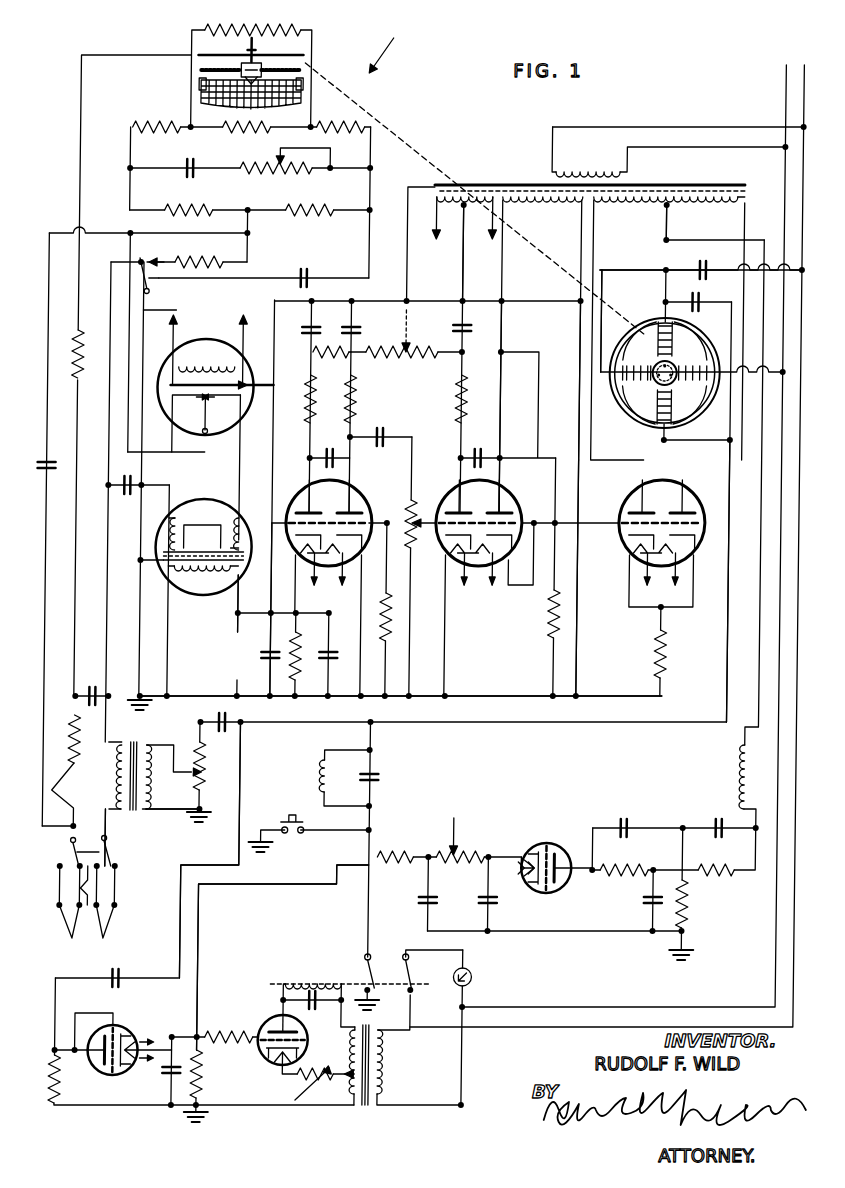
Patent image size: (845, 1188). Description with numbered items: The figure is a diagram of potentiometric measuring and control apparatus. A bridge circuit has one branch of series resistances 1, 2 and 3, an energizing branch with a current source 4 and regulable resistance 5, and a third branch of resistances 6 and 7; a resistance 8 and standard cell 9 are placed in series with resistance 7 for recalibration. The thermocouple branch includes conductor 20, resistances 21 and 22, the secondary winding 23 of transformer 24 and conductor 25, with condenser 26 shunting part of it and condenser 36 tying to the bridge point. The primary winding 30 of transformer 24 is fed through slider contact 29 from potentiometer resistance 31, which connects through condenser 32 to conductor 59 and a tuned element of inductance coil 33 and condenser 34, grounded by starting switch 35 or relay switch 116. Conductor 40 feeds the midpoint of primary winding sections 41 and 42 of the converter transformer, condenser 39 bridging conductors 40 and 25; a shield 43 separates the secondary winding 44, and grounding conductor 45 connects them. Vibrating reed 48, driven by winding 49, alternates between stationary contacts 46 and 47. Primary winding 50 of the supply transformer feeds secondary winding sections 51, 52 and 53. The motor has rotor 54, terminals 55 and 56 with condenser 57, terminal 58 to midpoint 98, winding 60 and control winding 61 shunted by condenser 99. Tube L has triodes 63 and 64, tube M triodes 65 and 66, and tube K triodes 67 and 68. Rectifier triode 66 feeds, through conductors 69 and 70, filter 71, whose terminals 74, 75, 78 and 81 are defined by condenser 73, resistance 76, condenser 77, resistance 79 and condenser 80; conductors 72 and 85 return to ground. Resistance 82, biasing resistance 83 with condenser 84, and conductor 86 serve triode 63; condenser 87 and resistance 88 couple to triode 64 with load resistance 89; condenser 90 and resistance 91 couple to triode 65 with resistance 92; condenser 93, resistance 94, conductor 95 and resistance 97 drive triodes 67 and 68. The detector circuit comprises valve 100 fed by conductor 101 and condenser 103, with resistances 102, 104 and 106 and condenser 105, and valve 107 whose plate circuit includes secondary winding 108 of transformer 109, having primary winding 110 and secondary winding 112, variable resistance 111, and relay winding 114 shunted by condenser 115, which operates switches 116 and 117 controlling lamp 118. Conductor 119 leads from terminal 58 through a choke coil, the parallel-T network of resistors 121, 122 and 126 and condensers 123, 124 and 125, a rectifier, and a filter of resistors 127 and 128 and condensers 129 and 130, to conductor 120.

The resistance 1 is at (246, 124).
The resistance 2 is at (162, 124).
The resistance 3 is at (336, 124).
The source of current 4 is at (186, 160).
The regulable resistance 5 is at (278, 172).
The resistance 6 is at (186, 204).
The resistance 7 is at (298, 204).
The resistance 8 is at (196, 258).
The standard cell 9 is at (303, 270).
The conductor 20 is at (76, 158).
The resistance 21 is at (76, 343).
The resistance 22 is at (76, 722).
The secondary winding 23 is at (112, 770).
The transformer 24 is at (131, 812).
The conductor 25 is at (108, 440).
The condenser 26 is at (92, 686).
The slider contact 29 is at (190, 773).
The primary winding 30 is at (176, 780).
The potentiometer resistance 31 is at (206, 770).
The condenser 32 is at (222, 732).
The inductance coil 33 is at (323, 777).
The condenser 34 is at (392, 778).
The starting switch 35 is at (286, 822).
The condenser 36 is at (66, 455).
The condenser 39 is at (128, 494).
The conductor 40 is at (172, 311).
The primary winding section 41 is at (233, 525).
The primary winding section 42 is at (180, 525).
The shield 43 is at (242, 585).
The secondary winding 44 is at (206, 580).
The grounding conductor 45 is at (190, 696).
The stationary contact 46 is at (211, 400).
The stationary contact 47 is at (199, 400).
The vibrating reed 48 is at (206, 428).
The winding 49 is at (170, 338).
The primary winding 50 is at (604, 168).
The secondary winding section 51 is at (630, 207).
The secondary winding section 52 is at (538, 203).
The secondary winding section 53 is at (464, 231).
The rotor 54 is at (638, 398).
The motor terminal 55 is at (604, 287).
The motor terminal 56 is at (712, 372).
The condenser 57 is at (702, 264).
The motor terminal 58 is at (660, 305).
The conductor 59 is at (710, 581).
The winding 60 is at (692, 348).
The control winding 61 is at (694, 398).
The triode 63 is at (292, 503).
The triode 64 is at (362, 502).
The triode 65 is at (445, 510).
The triode 66 is at (512, 505).
The triode 67 is at (623, 508).
The triode 68 is at (702, 508).
The conductor 69 is at (500, 396).
The conductor 70 is at (530, 396).
The filter 71 is at (410, 327).
The conductor 72 is at (536, 318).
The condenser 73 is at (452, 328).
The negative filter terminal 74 is at (463, 300).
The positive input terminal 75 is at (460, 356).
The resistance 76 is at (403, 357).
The condenser 77 is at (360, 327).
The filter point 78 is at (351, 352).
The resistance 79 is at (314, 368).
The condenser 80 is at (301, 330).
The filter point 81 is at (310, 352).
The fixed resistance 82 is at (308, 396).
The cathode biasing resistance 83 is at (303, 656).
The condenser 84 is at (343, 656).
The conductor 85 is at (578, 396).
The conductor 86 is at (276, 606).
The condenser 87 is at (331, 448).
The resistance 88 is at (392, 636).
The fixed resistance 89 is at (355, 392).
The condenser 90 is at (376, 425).
The resistance 91 is at (402, 527).
The fixed resistance 92 is at (458, 396).
The condenser 93 is at (478, 448).
The resistance 94 is at (554, 613).
The conductor 95 is at (610, 528).
The resistance 97 is at (660, 650).
The midpoint 98 is at (665, 208).
The condenser 99 is at (700, 306).
The electronic valve 100 is at (108, 1072).
The branch conductor 101 is at (185, 900).
The resistance 102 is at (205, 1078).
The condenser 103 is at (116, 967).
The resistance 104 is at (56, 1072).
The condenser 105 is at (162, 1075).
The resistance 106 is at (240, 1032).
The electronic valve 107 is at (262, 1048).
The secondary winding 108 is at (346, 1050).
The transformer 109 is at (369, 1112).
The primary winding 110 is at (384, 1060).
The variable resistance 111 is at (311, 1083).
The secondary winding 112 is at (352, 1086).
The relay winding 114 is at (312, 978).
The condenser 115 is at (304, 996).
The relay switch 116 is at (372, 958).
The signal switch 117 is at (410, 968).
The electric lamp 118 is at (472, 972).
The conductor 119 is at (742, 732).
The conductor 120 is at (205, 922).
The resistor 121 is at (726, 878).
The resistor 122 is at (615, 878).
The condenser 123 is at (720, 818).
The condenser 124 is at (622, 818).
The condenser 125 is at (640, 905).
The resistor 126 is at (690, 900).
The resistor 127 is at (470, 852).
The resistor 128 is at (400, 852).
The condenser 129 is at (498, 900).
The condenser 130 is at (420, 900).